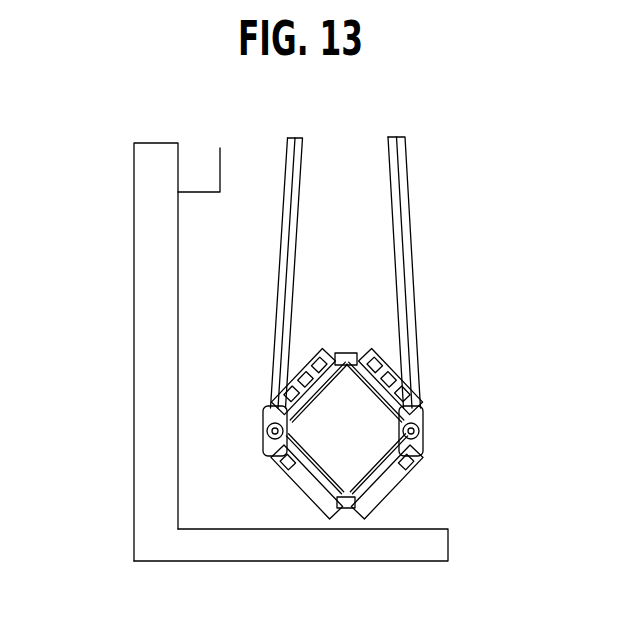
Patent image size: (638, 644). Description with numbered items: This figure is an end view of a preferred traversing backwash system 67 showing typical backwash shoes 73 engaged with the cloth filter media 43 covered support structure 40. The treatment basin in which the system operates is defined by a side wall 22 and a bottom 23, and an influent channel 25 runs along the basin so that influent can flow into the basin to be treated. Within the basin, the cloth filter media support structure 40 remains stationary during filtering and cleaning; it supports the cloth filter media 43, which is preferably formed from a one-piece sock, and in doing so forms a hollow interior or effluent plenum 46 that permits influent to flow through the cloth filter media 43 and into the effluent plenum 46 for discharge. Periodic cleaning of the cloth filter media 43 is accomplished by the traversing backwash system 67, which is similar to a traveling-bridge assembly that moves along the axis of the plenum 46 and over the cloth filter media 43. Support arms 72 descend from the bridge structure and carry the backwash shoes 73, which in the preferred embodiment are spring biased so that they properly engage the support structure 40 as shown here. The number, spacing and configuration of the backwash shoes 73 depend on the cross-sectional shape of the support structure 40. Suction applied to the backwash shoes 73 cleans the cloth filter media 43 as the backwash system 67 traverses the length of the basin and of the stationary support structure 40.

The side wall 22 is at (155, 398).
The bottom 23 is at (293, 545).
The influent channel 25 is at (190, 163).
The cloth filter media support structure 40 is at (348, 342).
The cloth filter media 43 is at (383, 452).
The effluent plenum 46 is at (347, 466).
The traversing backwash system 67 is at (472, 404).
The support arms 72 is at (278, 262).
The backwash shoes 73 is at (385, 488).